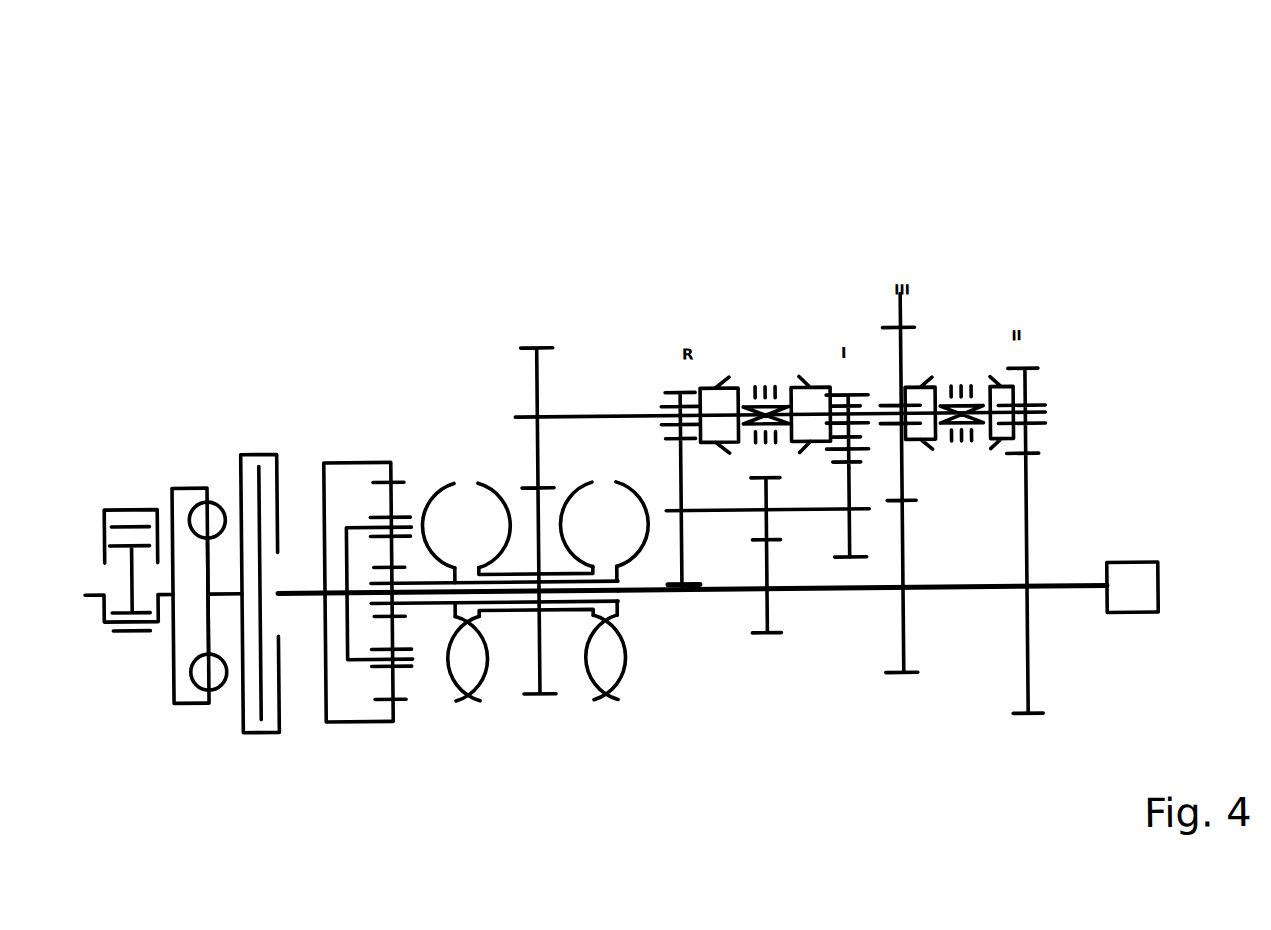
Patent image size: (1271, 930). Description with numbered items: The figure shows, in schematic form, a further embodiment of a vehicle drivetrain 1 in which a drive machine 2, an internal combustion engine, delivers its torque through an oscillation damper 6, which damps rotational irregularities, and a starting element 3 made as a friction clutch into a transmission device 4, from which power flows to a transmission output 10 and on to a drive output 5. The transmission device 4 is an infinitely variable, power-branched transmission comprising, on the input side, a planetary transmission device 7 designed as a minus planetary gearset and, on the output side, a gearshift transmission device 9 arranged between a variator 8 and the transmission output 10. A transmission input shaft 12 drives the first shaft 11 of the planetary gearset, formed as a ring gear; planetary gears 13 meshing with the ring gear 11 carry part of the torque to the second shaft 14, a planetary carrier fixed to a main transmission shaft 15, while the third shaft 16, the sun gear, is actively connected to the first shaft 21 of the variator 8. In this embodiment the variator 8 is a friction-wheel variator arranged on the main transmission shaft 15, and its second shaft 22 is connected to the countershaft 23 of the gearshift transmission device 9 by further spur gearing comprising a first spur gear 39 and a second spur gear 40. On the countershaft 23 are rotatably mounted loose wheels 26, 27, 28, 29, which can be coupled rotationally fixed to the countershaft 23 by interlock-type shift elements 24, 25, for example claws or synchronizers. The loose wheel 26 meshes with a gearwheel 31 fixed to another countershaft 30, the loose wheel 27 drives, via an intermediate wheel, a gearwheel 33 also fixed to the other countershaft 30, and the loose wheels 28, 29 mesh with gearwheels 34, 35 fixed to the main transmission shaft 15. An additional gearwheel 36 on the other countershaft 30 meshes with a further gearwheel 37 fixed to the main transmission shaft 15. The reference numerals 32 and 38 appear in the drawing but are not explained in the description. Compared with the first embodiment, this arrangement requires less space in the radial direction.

The vehicle drivetrain 1 is at (211, 149).
The drive machine 2 is at (127, 476).
The starting element 3 is at (247, 526).
The transmission device 4 is at (670, 114).
The drive output 5 is at (1136, 548).
The oscillation damper 6 is at (193, 512).
The planetary transmission device 7 is at (402, 387).
The variator 8 is at (603, 377).
The gearshift transmission device 9 is at (977, 144).
The transmission output 10 is at (901, 470).
The first shaft (ring gear) 11 is at (357, 520).
The transmission input shaft 12 is at (336, 726).
The planetary gears 13 is at (433, 670).
The second shaft (planetary carrier) 14 is at (399, 761).
The main transmission shaft 15 is at (516, 720).
The third shaft (sun gear) 16 is at (340, 489).
The first shaft of the variator 21 is at (465, 509).
The second shaft of the variator 22 is at (533, 335).
The countershaft 23 is at (888, 362).
The shift element 24 is at (764, 252).
The shift element 25 is at (1014, 382).
The loose wheel 26 is at (702, 320).
The loose wheel 27 is at (841, 260).
The loose wheel 28 is at (955, 249).
The loose wheel 29 is at (1070, 207).
The other countershaft 30 is at (769, 683).
The gearwheel 31 is at (660, 723).
The gear 32 is at (882, 652).
The gearwheel 33 is at (842, 706).
The gearwheel 34 is at (937, 746).
The gearwheel 35 is at (1006, 763).
The additional gearwheel 36 is at (697, 723).
The further gearwheel 37 is at (747, 667).
The shaft 38 is at (439, 235).
The first spur gear 39 is at (530, 603).
The second spur gear 40 is at (465, 201).